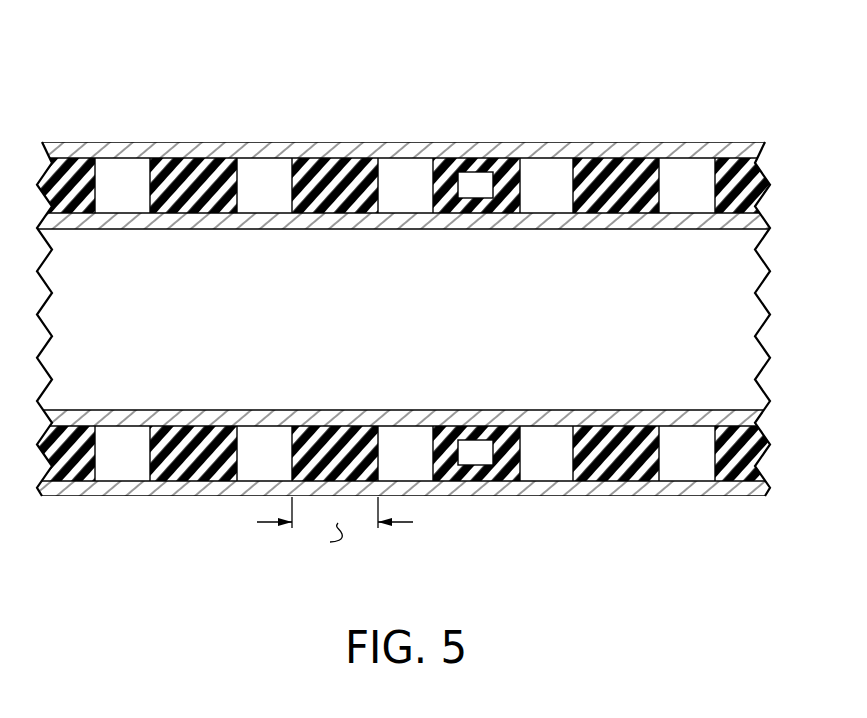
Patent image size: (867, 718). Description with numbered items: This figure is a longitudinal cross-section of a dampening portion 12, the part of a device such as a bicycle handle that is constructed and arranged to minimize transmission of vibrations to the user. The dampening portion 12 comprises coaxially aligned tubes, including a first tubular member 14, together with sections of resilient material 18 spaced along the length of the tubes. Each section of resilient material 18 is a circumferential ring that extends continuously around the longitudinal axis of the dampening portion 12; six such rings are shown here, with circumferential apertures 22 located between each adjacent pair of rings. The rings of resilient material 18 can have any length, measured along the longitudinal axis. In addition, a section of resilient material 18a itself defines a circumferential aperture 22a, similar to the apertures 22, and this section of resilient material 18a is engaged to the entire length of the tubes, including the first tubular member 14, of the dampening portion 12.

The dampening portion 12 is at (405, 301).
The first tubular member 14 is at (672, 230).
The section of resilient material 18 is at (72, 170).
The section of resilient material 18a is at (476, 513).
The circumferential aperture 22 is at (407, 170).
The circumferential aperture 22a is at (475, 448).